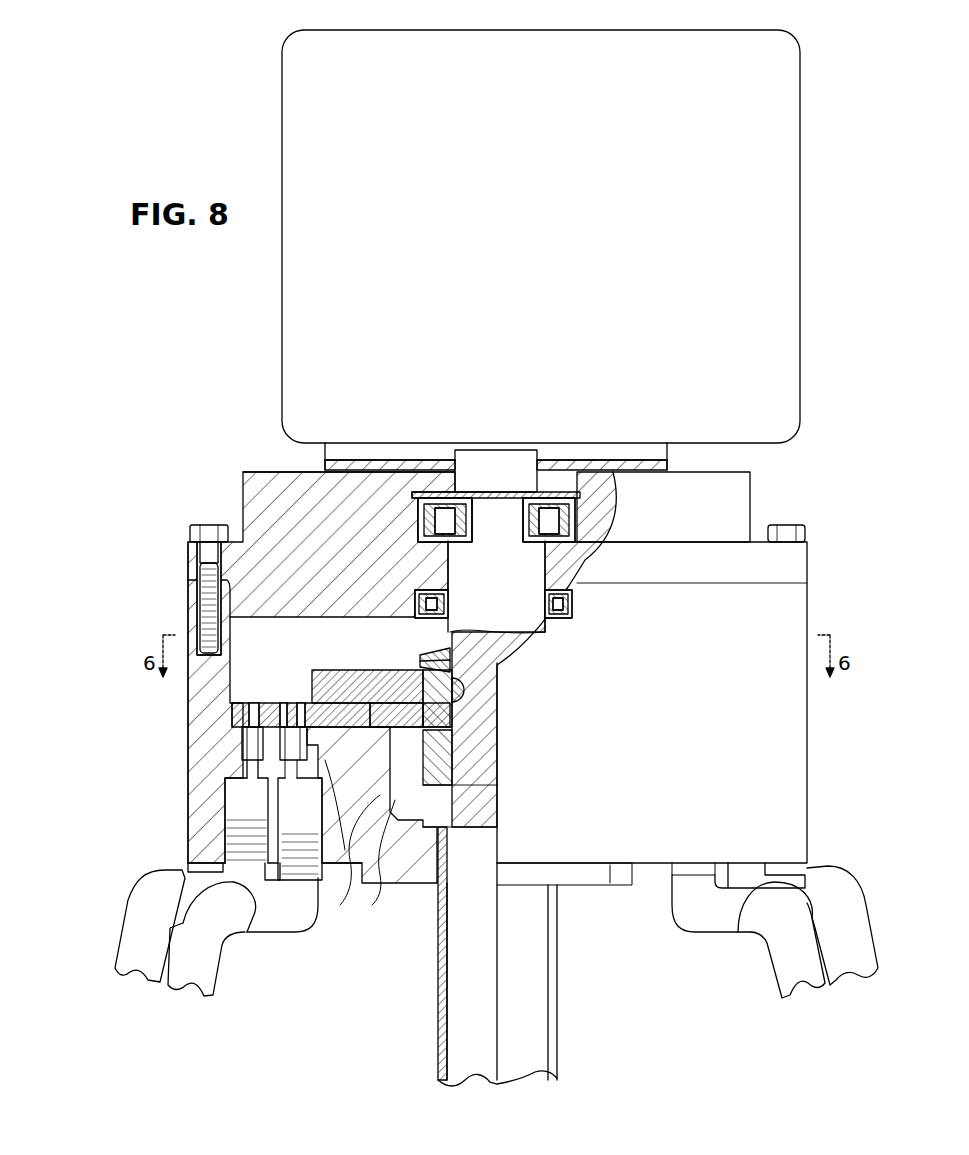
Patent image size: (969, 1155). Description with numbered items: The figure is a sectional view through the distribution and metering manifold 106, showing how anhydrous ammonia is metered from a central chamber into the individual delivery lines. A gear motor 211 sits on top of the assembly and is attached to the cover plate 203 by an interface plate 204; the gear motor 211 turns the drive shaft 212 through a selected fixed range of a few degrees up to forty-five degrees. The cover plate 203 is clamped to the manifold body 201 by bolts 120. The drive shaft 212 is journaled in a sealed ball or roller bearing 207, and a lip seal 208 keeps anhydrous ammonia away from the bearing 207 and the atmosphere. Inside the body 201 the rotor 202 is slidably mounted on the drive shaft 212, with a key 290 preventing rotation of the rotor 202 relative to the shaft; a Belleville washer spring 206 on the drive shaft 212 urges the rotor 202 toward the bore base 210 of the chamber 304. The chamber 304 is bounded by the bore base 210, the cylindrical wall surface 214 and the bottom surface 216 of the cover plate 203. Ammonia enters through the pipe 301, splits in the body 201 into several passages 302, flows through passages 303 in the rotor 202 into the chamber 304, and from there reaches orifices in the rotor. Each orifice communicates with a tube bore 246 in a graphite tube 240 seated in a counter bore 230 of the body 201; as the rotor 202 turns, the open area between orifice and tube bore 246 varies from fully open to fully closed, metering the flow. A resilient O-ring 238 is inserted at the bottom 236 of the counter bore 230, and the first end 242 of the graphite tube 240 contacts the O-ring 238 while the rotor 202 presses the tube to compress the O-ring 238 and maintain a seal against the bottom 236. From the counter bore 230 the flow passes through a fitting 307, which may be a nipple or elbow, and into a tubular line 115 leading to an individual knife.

The distribution and metering manifold 106 is at (269, 456).
The tubular line 115 is at (215, 960).
The bolts 120 is at (207, 525).
The body 201 is at (793, 707).
The rotor 202 is at (360, 670).
The cover plate 203 is at (750, 507).
The interface plate 204 is at (667, 464).
The Belleville washer spring 206 is at (447, 650).
The sealed ball or roller bearing 207 is at (545, 527).
The lip seal 208 is at (563, 607).
The bore base 210 is at (443, 733).
The gear motor 211 is at (358, 145).
The drive shaft 212 is at (482, 730).
The cylindrical wall surface 214 is at (237, 683).
The bottom surface 216 is at (308, 618).
The counter bore 230 is at (236, 703).
The bottom 236 is at (133, 768).
The resilient O-ring 238 is at (228, 782).
The graphite tube 240 is at (243, 743).
The first end 242 is at (345, 850).
The tube bore 246 is at (281, 712).
The key 290 is at (460, 689).
The pipe 301 is at (440, 985).
The passages 302 is at (383, 853).
The passages 303 is at (403, 682).
The chamber 304 is at (250, 627).
The fitting 307 is at (298, 915).